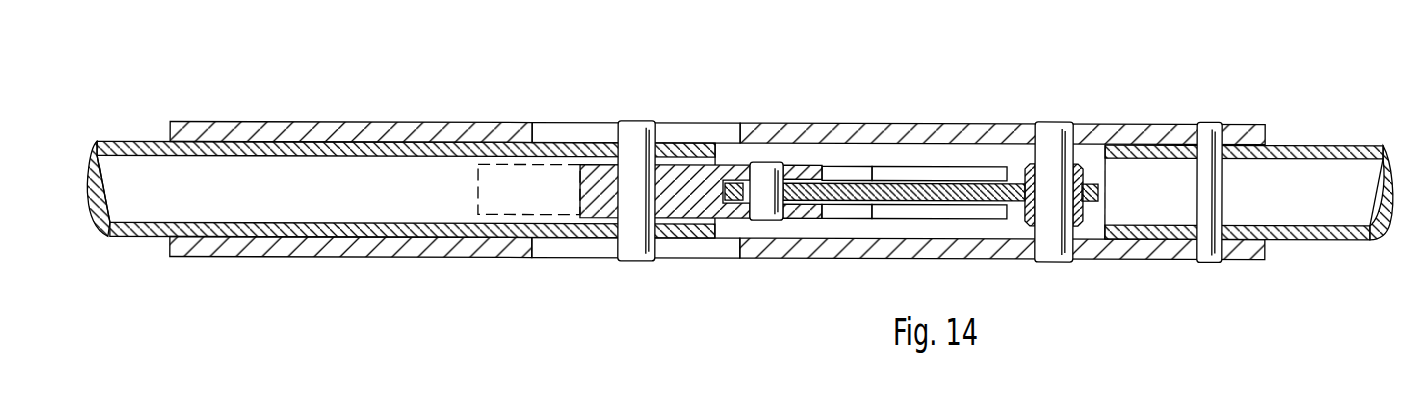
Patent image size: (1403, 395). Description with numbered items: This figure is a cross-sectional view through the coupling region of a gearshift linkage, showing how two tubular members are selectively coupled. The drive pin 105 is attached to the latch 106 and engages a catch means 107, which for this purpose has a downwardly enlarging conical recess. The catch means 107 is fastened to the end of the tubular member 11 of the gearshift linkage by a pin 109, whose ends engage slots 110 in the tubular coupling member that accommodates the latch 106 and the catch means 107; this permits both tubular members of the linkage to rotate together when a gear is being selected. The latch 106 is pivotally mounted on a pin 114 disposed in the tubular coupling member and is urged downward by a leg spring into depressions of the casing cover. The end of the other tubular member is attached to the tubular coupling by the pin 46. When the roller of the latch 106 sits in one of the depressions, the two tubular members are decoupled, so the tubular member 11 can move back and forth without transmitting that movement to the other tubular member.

The tubular member 11 is at (125, 148).
The slots 110 is at (577, 242).
The pin 109 is at (638, 235).
The catch means 107 is at (676, 177).
The drive pin 105 is at (765, 177).
The latch 106 is at (912, 187).
The pin 114 is at (1055, 143).
The pin 46 is at (1216, 147).